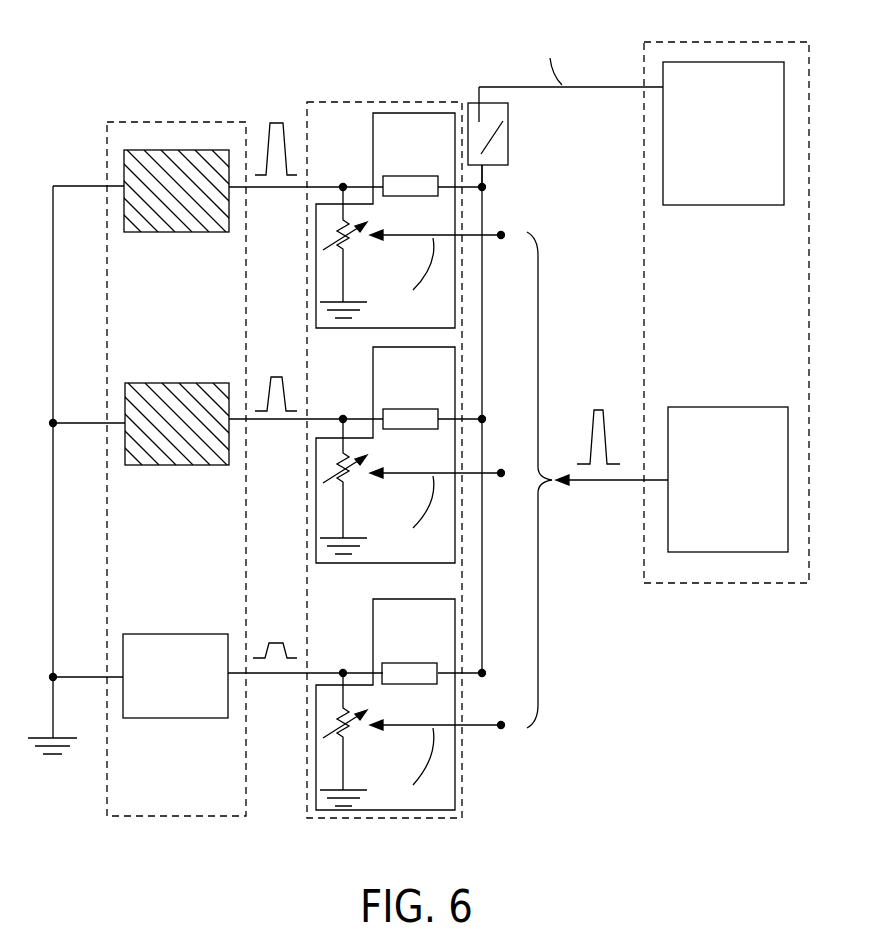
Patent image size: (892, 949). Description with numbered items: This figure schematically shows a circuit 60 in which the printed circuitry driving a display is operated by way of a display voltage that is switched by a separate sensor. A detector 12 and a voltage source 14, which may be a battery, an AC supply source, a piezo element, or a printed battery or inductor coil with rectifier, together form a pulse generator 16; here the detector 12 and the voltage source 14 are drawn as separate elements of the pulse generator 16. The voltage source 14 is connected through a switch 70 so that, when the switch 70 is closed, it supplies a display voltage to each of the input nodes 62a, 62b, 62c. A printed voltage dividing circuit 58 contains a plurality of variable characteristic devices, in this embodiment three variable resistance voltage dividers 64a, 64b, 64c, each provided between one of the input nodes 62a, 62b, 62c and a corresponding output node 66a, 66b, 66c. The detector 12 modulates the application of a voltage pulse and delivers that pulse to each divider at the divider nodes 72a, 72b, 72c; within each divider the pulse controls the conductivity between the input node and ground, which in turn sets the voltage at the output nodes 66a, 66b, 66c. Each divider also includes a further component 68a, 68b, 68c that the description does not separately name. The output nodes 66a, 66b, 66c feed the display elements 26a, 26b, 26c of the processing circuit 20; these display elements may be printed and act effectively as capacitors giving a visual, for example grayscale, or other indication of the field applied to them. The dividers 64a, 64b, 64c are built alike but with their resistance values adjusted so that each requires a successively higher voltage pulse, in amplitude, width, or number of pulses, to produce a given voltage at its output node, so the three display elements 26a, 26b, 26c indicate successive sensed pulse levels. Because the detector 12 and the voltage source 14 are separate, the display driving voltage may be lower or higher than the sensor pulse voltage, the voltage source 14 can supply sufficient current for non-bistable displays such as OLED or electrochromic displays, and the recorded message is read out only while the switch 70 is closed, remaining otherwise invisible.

The circuit 60 is at (86, 61).
The processing circuit 20 is at (178, 118).
The printed voltage dividing circuit 58 is at (393, 100).
The display element 26a is at (175, 232).
The display element 26b is at (175, 465).
The display element 26c is at (175, 718).
The output node 66a is at (345, 182).
The output node 66b is at (345, 414).
The output node 66c is at (345, 668).
The resistor (first) 68a is at (410, 175).
The resistor (second) 68b is at (410, 408).
The resistor (third) 68c is at (410, 662).
The variable resistance voltage divider 64a is at (456, 301).
The variable resistance voltage divider 64b is at (456, 380).
The variable resistance voltage divider 64c is at (456, 632).
The input node 62a is at (486, 187).
The input node 62b is at (486, 419).
The input node 62c is at (486, 673).
The divider node 72a is at (505, 235).
The control signal line (second) 72b is at (502, 477).
The control signal line (third) 72c is at (502, 729).
The switch 70 is at (508, 138).
The voltage source 14 is at (741, 147).
The detector 12 is at (739, 490).
The pulse generator 16 is at (724, 583).